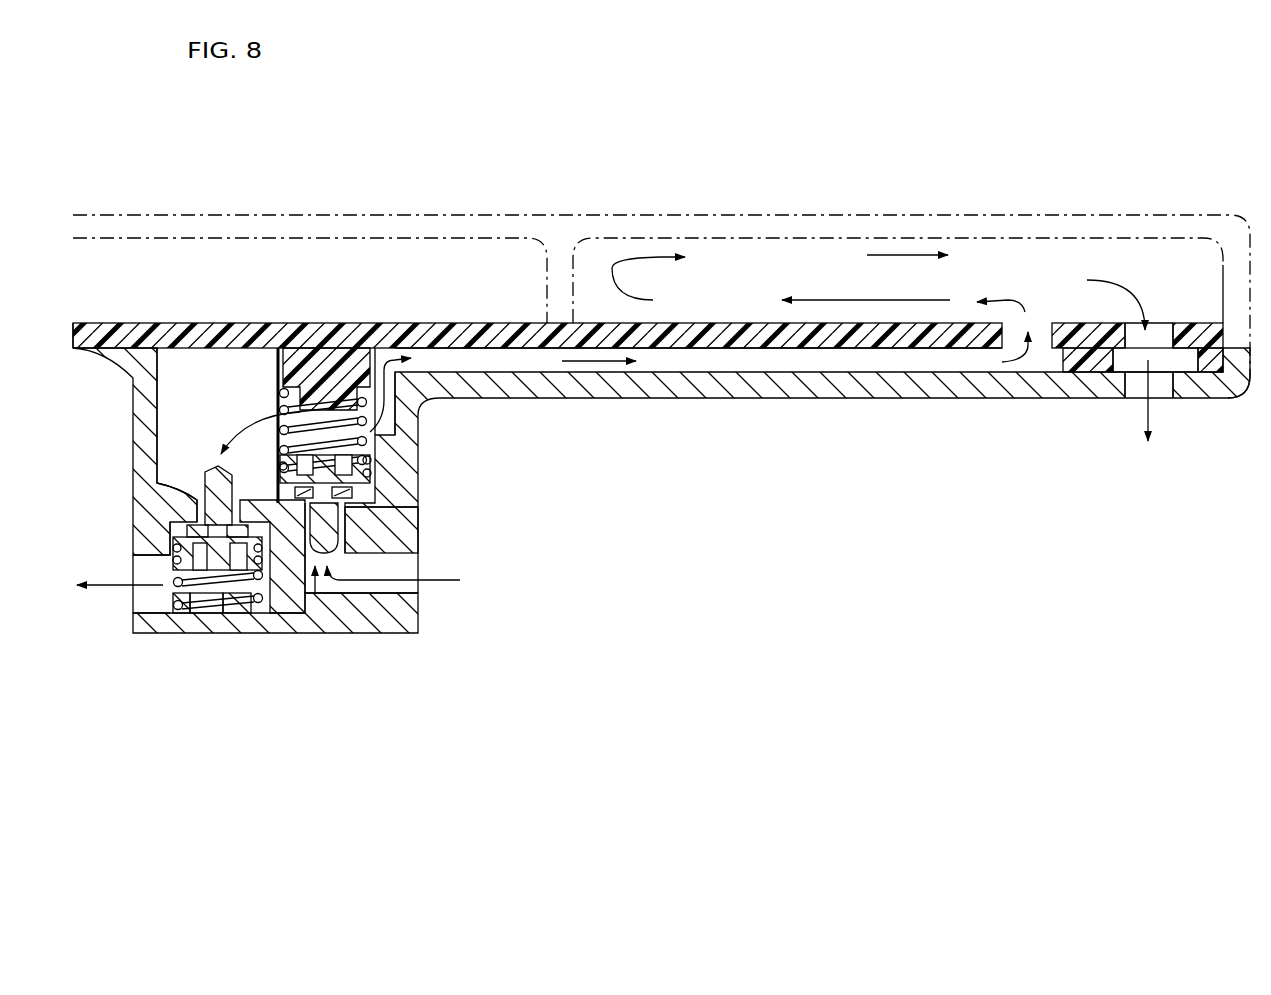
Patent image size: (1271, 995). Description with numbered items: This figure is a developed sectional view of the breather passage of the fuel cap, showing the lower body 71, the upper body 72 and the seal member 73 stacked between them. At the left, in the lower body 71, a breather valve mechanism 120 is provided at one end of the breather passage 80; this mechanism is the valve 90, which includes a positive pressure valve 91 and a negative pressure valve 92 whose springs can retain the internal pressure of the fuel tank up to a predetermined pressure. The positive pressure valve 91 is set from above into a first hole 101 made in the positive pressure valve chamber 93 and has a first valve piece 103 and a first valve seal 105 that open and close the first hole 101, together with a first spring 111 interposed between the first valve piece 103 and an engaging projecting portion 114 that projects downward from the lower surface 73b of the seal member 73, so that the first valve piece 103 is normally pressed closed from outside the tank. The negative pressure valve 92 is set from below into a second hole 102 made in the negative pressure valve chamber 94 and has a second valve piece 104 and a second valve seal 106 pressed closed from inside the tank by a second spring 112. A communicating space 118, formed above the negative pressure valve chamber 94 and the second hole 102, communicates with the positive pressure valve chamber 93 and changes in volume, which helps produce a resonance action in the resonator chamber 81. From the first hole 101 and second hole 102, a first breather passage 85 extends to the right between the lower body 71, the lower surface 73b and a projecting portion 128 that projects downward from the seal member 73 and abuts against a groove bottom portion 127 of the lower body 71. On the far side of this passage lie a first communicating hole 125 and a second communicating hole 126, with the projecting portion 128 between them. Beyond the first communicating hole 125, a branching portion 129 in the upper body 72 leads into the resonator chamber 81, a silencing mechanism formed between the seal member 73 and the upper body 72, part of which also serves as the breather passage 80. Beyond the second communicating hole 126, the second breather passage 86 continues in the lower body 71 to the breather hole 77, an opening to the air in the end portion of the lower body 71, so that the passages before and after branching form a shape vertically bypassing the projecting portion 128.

The lower body 71 is at (843, 385).
The upper body 72 is at (846, 215).
The seal member 73 is at (424, 322).
The lower surface 73b is at (520, 364).
The breather hole 77 is at (1157, 365).
The breather passage 80 is at (830, 417).
The resonator chamber 81 is at (722, 238).
The first breather passage 85 is at (690, 362).
The second breather passage 86 is at (1183, 365).
The valve 90 is at (258, 597).
The positive pressure valve 91 is at (316, 575).
The negative pressure valve 92 is at (210, 598).
The positive pressure valve chamber 93 is at (370, 447).
The negative pressure valve chamber 94 is at (145, 568).
The first hole 101 is at (350, 513).
The second hole 102 is at (205, 493).
The first valve piece 103 is at (364, 624).
The second valve piece 104 is at (212, 470).
The first valve seal 105 is at (352, 488).
The second valve seal 106 is at (195, 523).
The first spring 111 is at (278, 413).
The second spring 112 is at (200, 587).
The engaging projecting portion 114 is at (362, 413).
The communicating space 118 is at (160, 372).
The breather valve mechanism 120 is at (258, 597).
The first communicating hole 125 is at (1052, 330).
The second communicating hole 126 is at (1157, 325).
The groove bottom portion 127 is at (953, 360).
The projecting portion 128 is at (1088, 360).
The branching portion 129 is at (1012, 332).